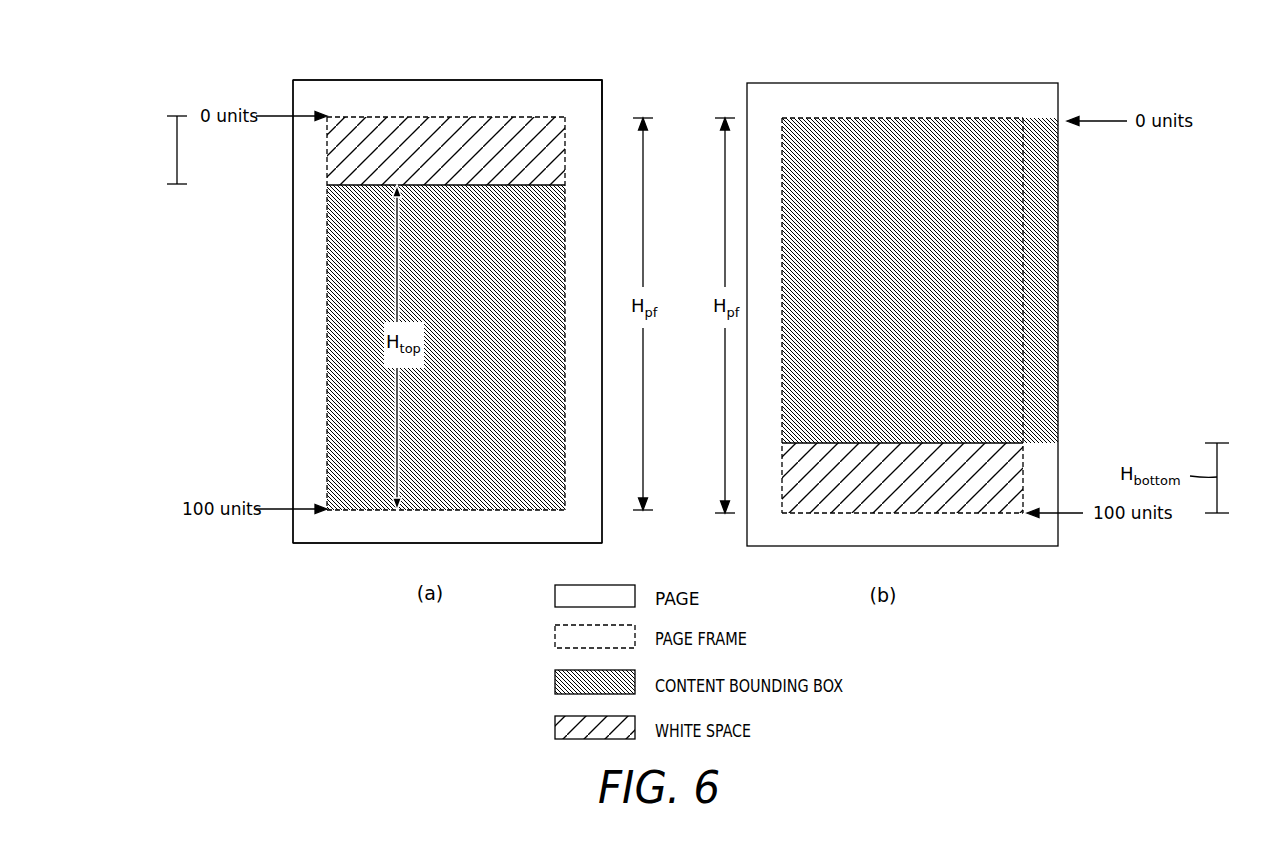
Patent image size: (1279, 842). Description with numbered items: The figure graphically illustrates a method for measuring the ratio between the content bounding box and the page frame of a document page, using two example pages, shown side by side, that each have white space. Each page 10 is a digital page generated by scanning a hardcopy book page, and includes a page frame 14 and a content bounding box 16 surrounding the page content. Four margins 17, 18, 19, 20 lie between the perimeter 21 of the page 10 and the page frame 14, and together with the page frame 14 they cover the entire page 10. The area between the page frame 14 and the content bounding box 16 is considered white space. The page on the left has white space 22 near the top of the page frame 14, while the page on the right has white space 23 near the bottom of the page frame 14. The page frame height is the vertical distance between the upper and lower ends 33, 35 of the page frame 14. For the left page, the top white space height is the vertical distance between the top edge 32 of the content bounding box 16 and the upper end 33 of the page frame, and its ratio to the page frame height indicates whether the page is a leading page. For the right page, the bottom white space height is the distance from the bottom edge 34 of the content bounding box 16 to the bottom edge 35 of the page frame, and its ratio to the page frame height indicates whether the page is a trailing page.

The page 10 is at (291, 400).
The page frame 14 is at (327, 450).
The content bounding box 16 is at (327, 250).
The margin 17 is at (305, 337).
The margin 18 is at (438, 87).
The margin 19 is at (585, 350).
The margin 20 is at (394, 535).
The perimeter 21 is at (548, 82).
The white space 22 is at (338, 147).
The white space 23 is at (900, 505).
The top edge 32 is at (318, 184).
The upper end 33 is at (338, 115).
The bottom edge 34 is at (1037, 443).
The lower end 35 is at (470, 512).